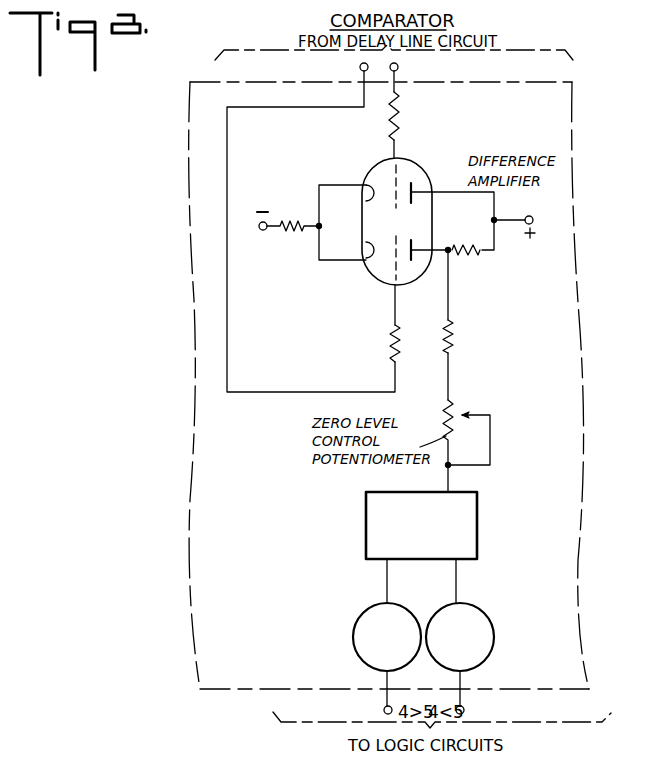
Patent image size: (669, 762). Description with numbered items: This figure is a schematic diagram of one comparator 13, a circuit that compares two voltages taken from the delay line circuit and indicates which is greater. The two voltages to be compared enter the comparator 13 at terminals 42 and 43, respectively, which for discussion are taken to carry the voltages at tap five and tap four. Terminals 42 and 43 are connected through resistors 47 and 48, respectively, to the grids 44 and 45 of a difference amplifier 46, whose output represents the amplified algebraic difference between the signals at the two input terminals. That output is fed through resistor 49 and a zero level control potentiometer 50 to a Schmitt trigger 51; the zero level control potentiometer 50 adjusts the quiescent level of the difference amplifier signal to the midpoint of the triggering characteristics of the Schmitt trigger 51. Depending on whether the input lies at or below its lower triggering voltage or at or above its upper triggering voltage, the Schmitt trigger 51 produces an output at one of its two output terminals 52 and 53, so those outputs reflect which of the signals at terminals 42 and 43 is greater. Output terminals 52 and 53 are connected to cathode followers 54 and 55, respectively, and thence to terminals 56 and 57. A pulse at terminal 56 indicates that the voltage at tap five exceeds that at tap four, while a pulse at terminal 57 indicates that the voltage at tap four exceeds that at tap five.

The comparator 13 is at (522, 136).
The terminal 42 is at (360, 67).
The terminal 43 is at (398, 67).
The grid 44 is at (393, 268).
The grid 45 is at (404, 182).
The difference amplifier 46 is at (503, 207).
The resistor 47 is at (393, 338).
The resistor 48 is at (388, 130).
The resistor 49 is at (454, 350).
The zero level control potentiometer 50 is at (492, 446).
The Schmitt trigger 51 is at (480, 536).
The output terminal 52 is at (460, 563).
The output terminal 53 is at (383, 562).
The cathode follower 54 is at (496, 637).
The cathode follower 55 is at (352, 632).
The terminal 56 is at (466, 710).
The terminal 57 is at (384, 710).